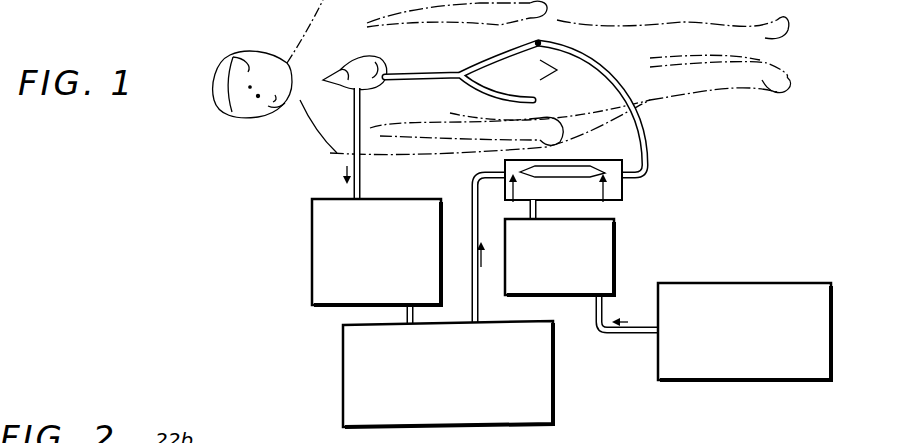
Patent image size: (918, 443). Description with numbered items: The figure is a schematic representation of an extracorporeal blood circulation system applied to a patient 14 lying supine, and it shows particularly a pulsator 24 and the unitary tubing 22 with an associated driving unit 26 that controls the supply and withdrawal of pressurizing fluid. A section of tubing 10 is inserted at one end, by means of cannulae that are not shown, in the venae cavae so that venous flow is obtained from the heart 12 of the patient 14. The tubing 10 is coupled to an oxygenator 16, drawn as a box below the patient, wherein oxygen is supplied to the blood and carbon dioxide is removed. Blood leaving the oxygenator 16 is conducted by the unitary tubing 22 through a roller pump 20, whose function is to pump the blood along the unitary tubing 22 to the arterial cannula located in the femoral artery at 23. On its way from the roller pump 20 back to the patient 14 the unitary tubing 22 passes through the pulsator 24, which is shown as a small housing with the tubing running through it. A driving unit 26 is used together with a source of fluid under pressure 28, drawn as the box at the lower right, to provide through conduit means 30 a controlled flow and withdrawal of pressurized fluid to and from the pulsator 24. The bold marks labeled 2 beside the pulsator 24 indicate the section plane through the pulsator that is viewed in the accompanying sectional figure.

The section of tubing 10 is at (360, 160).
The heart 12 is at (383, 84).
The patient 14 is at (312, 15).
The oxygenator 16 is at (326, 248).
The roller pump 20 is at (348, 380).
The unitary tubing 22 is at (640, 122).
The femoral artery location 23 is at (536, 42).
The pulsator 24 is at (580, 156).
The driving unit 26 is at (608, 248).
The source of fluid under pressure 28 is at (748, 372).
The conduit means 30 is at (536, 208).
The section line 2- 2 is at (563, 205).